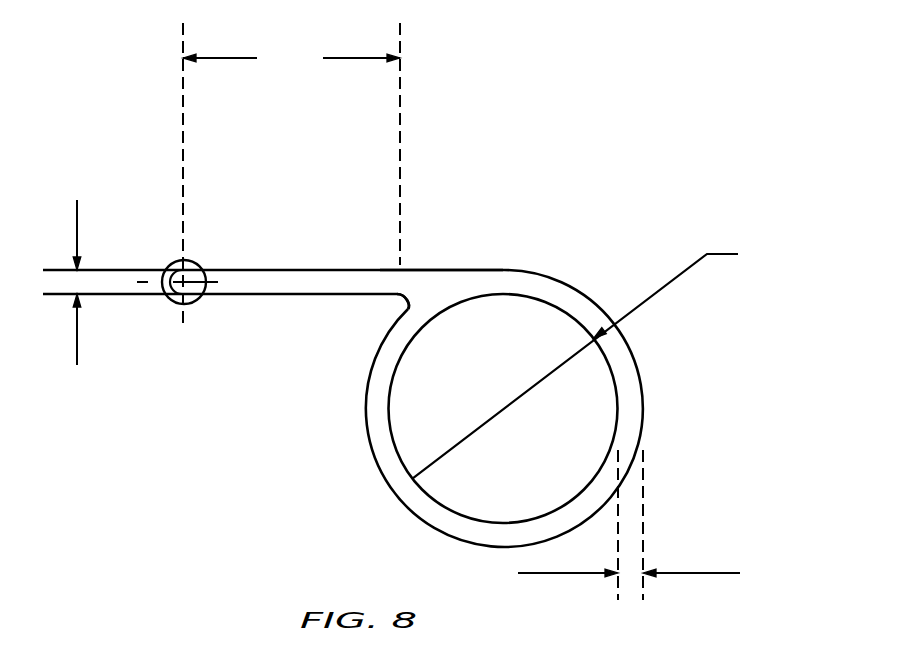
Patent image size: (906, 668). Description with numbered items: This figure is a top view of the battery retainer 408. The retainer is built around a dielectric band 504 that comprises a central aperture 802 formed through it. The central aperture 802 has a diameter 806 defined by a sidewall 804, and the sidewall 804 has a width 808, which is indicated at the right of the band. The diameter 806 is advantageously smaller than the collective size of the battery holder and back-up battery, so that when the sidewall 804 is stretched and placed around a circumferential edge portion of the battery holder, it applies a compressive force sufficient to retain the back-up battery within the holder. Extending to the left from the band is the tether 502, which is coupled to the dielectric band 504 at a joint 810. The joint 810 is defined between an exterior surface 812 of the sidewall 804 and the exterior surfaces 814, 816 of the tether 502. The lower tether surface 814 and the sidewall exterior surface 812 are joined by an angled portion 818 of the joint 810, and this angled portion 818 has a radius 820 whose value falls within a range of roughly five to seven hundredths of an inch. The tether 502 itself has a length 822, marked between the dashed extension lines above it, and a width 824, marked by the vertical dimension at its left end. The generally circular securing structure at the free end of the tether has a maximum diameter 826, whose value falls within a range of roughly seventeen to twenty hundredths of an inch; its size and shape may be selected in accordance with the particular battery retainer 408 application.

The battery retainer 408 is at (415, 311).
The tether 502 is at (279, 260).
The dielectric band 504 is at (500, 393).
The central aperture 802 is at (509, 404).
The sidewall 804 is at (548, 302).
The diameter 806 is at (599, 361).
The width 808 is at (653, 525).
The joint 810 is at (418, 247).
The exterior surface 812 is at (637, 371).
The exterior surface 814 is at (311, 294).
The exterior surface 816 is at (280, 270).
The angled portion 818 is at (384, 314).
The radius 820 is at (418, 284).
The length 822 is at (291, 173).
The width 824 is at (75, 265).
The maximum diameter 826 is at (175, 301).